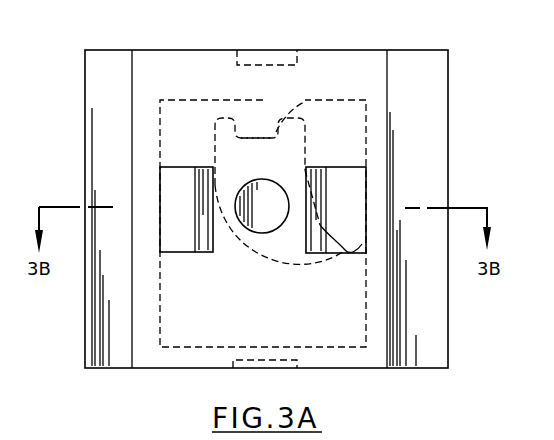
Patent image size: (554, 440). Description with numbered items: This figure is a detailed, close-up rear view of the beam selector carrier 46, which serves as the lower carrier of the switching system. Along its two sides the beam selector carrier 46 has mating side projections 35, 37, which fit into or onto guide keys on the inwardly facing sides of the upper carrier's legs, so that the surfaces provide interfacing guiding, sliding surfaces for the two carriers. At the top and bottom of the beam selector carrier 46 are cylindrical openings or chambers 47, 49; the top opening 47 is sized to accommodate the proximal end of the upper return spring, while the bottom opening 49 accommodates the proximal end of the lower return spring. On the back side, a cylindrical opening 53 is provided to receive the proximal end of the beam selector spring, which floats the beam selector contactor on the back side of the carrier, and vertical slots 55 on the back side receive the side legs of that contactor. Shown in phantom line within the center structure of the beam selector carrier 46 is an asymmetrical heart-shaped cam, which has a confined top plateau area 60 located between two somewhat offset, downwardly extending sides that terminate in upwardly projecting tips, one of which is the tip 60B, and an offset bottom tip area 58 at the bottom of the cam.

The mating side projection 35 is at (104, 366).
The mating side projection 37 is at (437, 346).
The beam selector carrier 46 is at (390, 47).
The top cylindrical opening 47 is at (268, 56).
The bottom cylindrical opening 49 is at (273, 368).
The back-side cylindrical opening 53 is at (278, 216).
The vertical slots 55 is at (352, 195).
The bottom tip area 58 is at (343, 246).
The top plateau area 60 is at (284, 134).
The upwardly projecting tip 60B is at (258, 119).